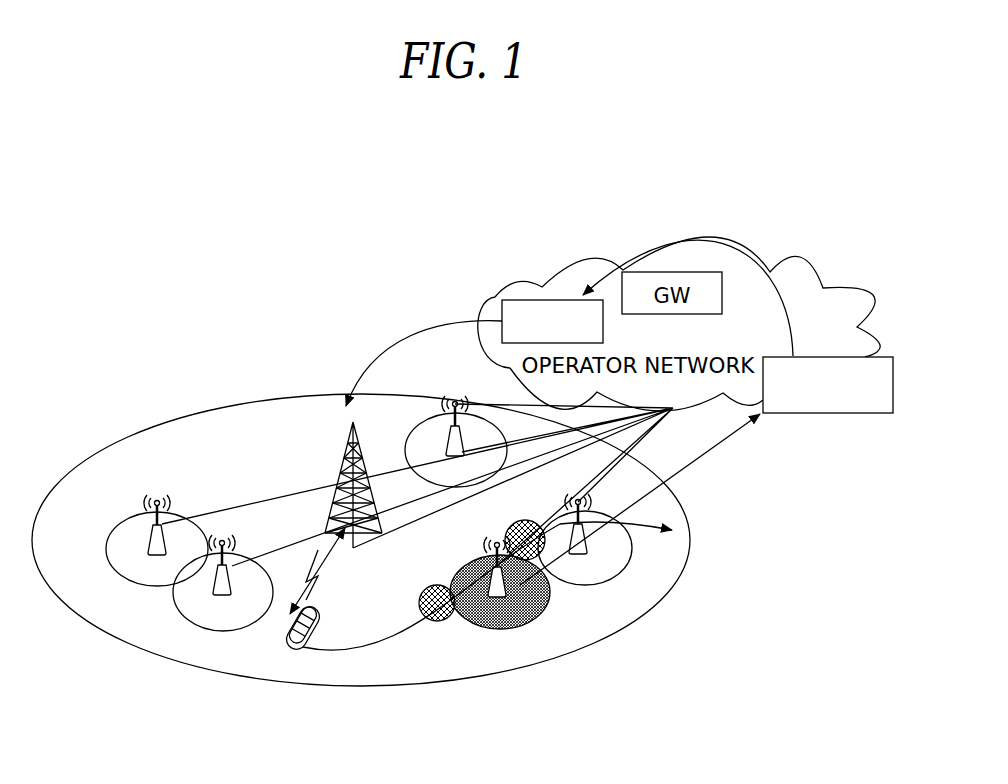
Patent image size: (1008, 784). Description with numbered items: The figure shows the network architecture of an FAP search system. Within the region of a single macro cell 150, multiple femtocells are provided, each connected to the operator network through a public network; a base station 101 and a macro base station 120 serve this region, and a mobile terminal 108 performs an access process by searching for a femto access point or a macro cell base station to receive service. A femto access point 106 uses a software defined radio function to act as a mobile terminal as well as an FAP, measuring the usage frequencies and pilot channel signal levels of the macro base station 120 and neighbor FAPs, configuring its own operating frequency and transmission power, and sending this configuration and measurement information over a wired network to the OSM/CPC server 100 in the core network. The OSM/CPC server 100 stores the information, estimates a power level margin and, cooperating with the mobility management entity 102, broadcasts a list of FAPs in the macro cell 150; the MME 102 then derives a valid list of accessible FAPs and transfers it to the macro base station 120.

The OSM/CPC server 100 is at (862, 414).
The base station 101 is at (147, 543).
The mobility management entity 102 is at (520, 300).
The femto access point 106 is at (547, 611).
The mobile terminal 108 is at (328, 614).
The macro base station 120 is at (350, 440).
The macro cell 150 is at (692, 532).